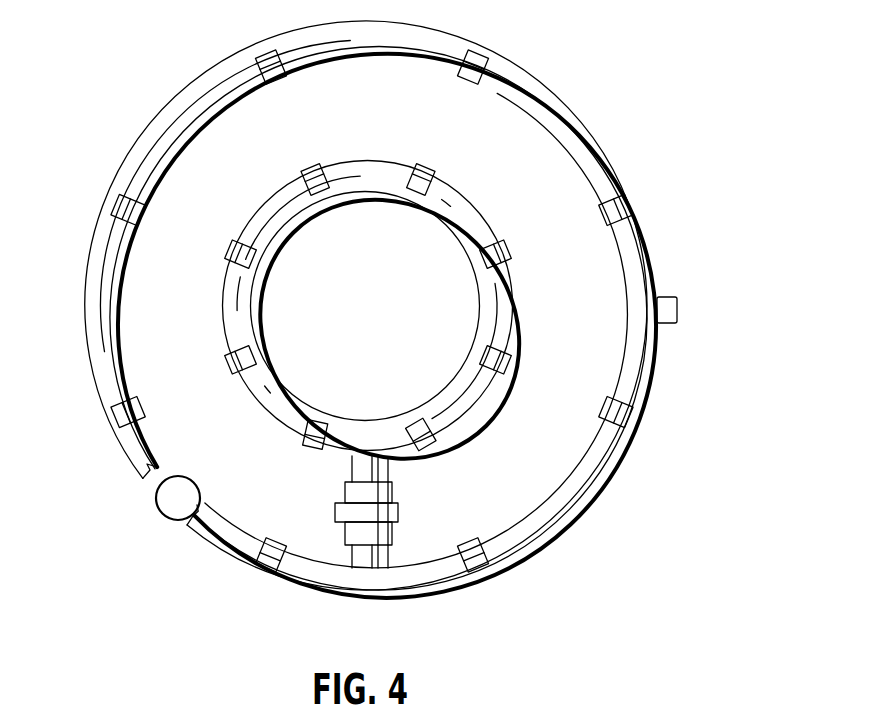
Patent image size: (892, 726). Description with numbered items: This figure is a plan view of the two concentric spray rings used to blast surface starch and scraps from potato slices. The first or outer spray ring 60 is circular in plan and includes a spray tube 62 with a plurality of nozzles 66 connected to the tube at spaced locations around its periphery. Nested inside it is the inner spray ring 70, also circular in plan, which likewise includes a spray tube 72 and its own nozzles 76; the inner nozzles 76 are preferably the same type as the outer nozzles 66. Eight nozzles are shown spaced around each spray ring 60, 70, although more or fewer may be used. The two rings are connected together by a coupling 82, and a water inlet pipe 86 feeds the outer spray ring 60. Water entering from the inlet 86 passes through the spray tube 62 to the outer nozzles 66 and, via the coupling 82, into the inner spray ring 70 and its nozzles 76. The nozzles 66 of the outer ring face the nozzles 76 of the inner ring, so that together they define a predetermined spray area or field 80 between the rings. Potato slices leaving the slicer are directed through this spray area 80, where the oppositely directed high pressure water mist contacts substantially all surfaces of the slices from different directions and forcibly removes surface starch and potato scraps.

The outer spray ring 60 is at (413, 309).
The spray tube 62 is at (655, 252).
The nozzles 66 is at (628, 189).
The inner spray ring 70 is at (390, 310).
The spray tube 72 is at (278, 203).
The nozzles 76 is at (230, 249).
The spray area 80 is at (454, 338).
The coupling 82 is at (398, 512).
The water inlet pipe 86 is at (147, 519).